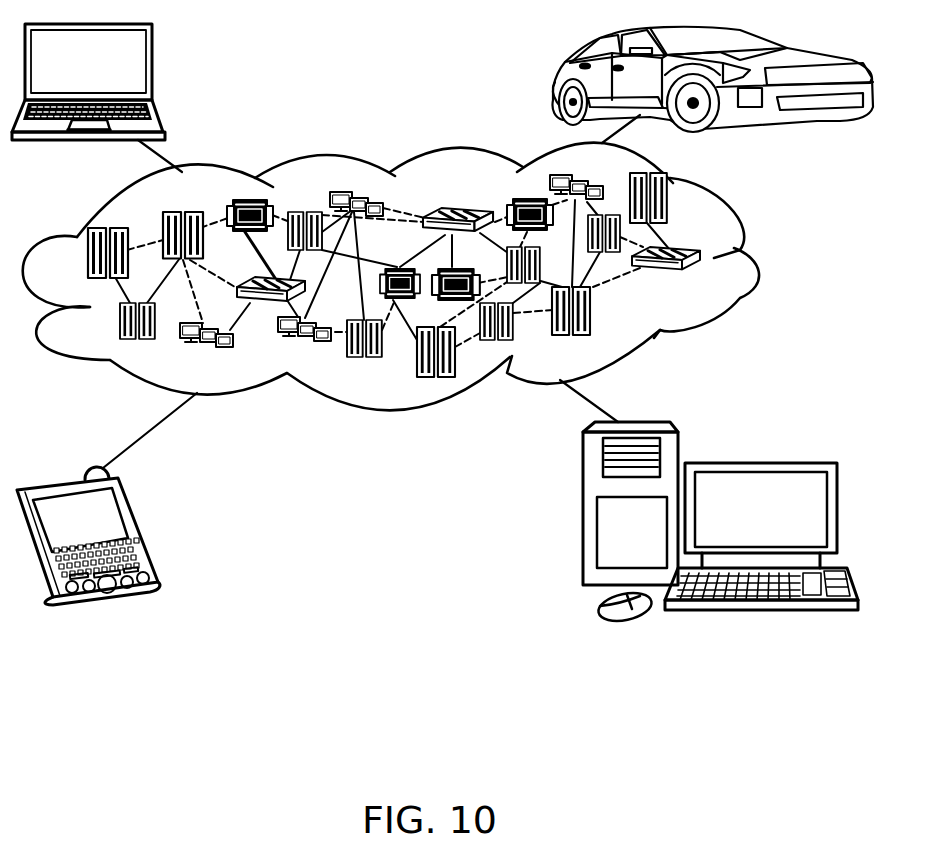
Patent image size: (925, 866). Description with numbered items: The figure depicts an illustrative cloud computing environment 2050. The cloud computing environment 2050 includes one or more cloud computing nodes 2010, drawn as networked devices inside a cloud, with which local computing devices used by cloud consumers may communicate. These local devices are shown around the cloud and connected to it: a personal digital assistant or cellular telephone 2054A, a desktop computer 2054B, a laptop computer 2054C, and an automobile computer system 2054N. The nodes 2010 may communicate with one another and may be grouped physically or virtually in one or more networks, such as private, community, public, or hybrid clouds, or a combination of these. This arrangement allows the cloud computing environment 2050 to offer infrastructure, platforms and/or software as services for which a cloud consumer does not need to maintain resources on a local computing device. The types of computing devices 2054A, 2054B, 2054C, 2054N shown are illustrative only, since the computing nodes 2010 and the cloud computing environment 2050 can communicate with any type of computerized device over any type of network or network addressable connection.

The personal digital assistant (PDA) or cellular telephone 2054A is at (142, 528).
The desktop computer 2054B is at (768, 447).
The laptop computer 2054C is at (152, 68).
The automobile computer system 2054N is at (556, 75).
The cloud computing environment 2050 is at (758, 258).
The cloud computing nodes 2010 is at (705, 282).